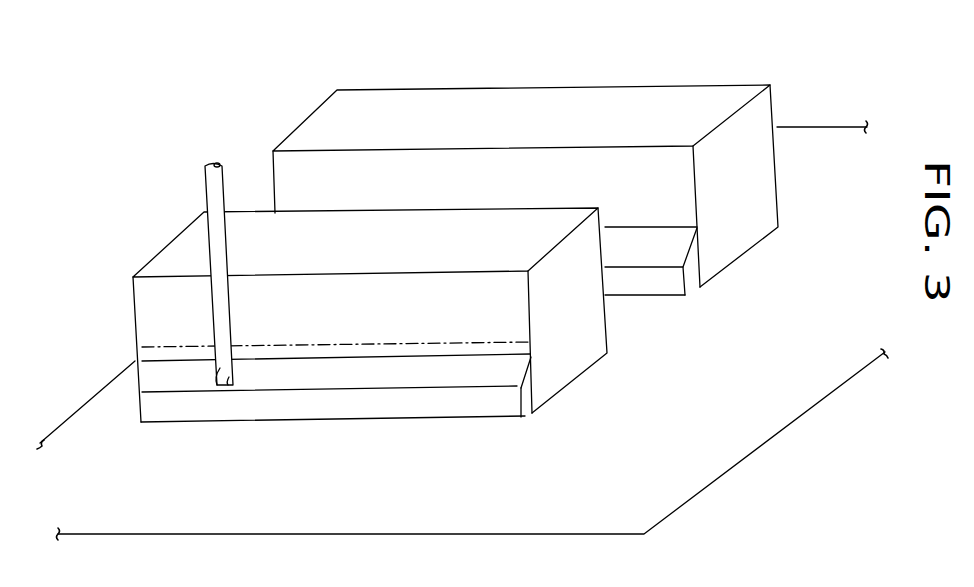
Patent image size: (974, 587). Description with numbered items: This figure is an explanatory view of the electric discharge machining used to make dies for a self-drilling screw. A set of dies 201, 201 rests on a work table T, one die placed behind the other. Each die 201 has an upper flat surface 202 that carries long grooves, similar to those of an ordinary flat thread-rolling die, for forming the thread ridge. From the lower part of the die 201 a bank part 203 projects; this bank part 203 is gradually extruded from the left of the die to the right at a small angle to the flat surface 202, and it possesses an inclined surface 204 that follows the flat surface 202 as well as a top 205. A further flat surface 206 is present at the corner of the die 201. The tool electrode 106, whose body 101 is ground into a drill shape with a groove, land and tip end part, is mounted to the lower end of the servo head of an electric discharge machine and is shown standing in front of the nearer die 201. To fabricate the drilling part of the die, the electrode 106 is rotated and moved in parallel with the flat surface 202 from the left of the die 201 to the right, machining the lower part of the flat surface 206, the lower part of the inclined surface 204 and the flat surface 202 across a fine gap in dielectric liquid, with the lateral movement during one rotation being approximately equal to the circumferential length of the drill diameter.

The body 101 is at (212, 370).
The electrode 106 is at (202, 183).
The die 201 is at (580, 87).
The upper flat surface 202 is at (170, 317).
The bank part 203 is at (435, 421).
The inclined surface 204 is at (390, 372).
The top 205 is at (512, 388).
The flat surface 206 is at (537, 352).
The work table T is at (769, 442).